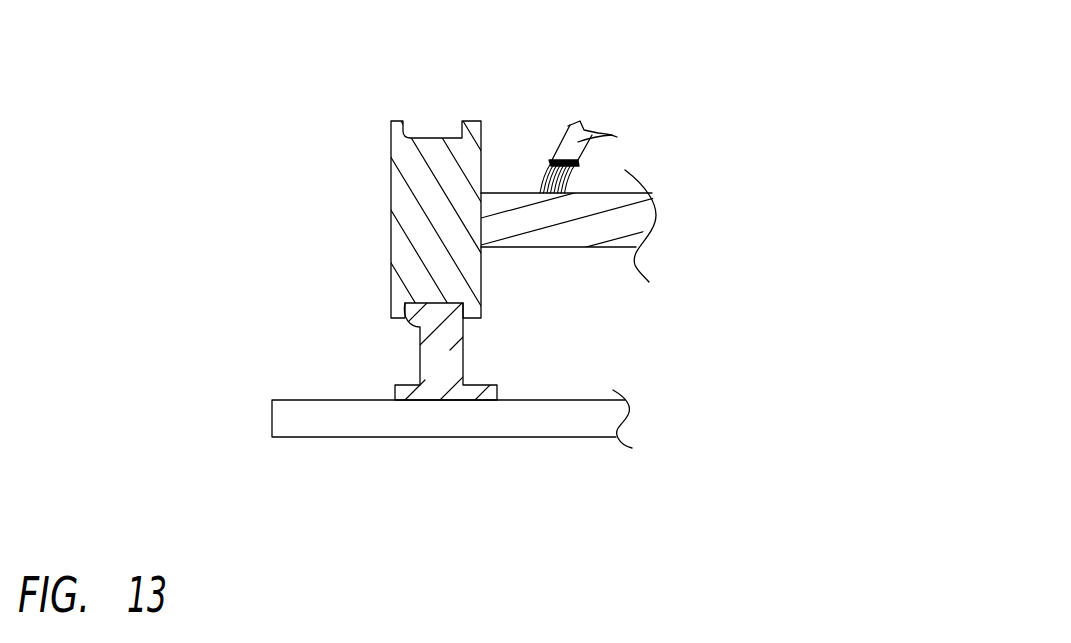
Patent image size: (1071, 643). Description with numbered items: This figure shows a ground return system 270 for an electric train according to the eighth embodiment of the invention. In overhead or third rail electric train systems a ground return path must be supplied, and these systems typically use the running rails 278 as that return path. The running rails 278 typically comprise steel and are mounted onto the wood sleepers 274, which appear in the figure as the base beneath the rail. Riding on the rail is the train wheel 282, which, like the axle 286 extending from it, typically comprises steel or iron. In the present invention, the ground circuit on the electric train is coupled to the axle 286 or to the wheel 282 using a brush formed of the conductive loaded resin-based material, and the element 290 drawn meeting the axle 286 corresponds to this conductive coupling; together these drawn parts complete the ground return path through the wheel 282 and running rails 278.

The ground return system 270 is at (757, 33).
The wood sleepers 274 is at (572, 428).
The running rails 278 is at (430, 362).
The train wheel 282 is at (400, 235).
The axle 286 is at (618, 226).
The braided wire 290 is at (607, 130).